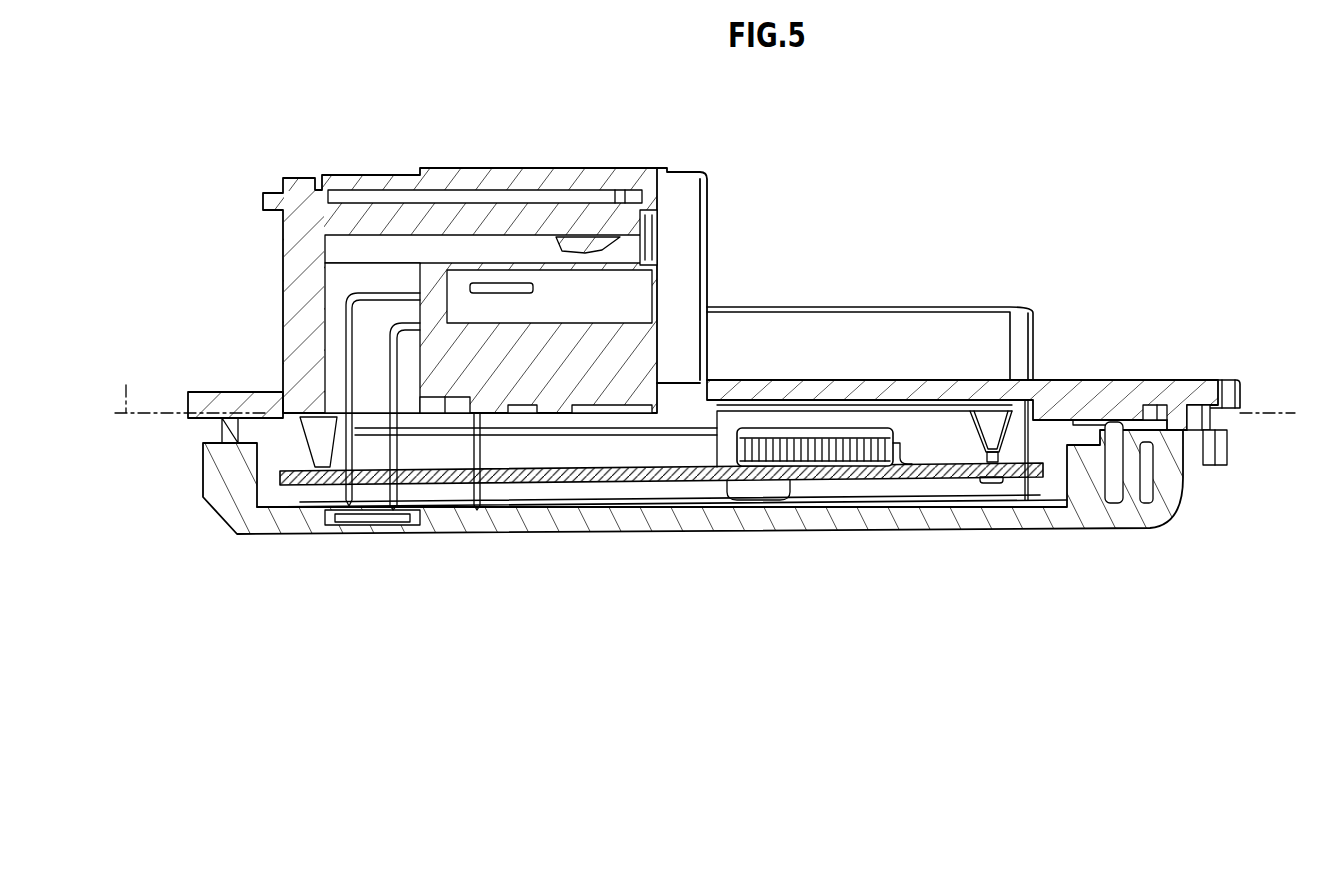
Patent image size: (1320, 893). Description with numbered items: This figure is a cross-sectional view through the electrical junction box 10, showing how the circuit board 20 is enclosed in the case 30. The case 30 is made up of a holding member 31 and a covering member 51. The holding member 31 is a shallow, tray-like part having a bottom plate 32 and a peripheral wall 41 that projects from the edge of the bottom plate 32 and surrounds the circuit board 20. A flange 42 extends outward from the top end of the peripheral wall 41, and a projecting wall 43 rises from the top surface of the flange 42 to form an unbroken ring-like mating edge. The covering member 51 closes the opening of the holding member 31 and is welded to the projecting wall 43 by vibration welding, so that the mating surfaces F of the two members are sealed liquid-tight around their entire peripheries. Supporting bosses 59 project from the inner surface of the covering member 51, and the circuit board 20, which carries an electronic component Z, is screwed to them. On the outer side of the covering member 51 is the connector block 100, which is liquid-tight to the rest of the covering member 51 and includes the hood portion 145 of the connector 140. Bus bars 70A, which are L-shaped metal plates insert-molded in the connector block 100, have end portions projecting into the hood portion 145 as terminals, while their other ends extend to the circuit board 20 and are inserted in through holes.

The electrical junction box 10 is at (554, 97).
The connector block 100 is at (378, 177).
The connector 140 is at (593, 250).
The hood portion 145 is at (606, 237).
The bus bars 70A is at (387, 357).
The supporting bosses 59 is at (780, 418).
The electronic component Z is at (863, 437).
The covering member 51 is at (1055, 380).
The case 30 is at (1130, 380).
The projecting wall 43 is at (1180, 416).
The flange 42 is at (1210, 450).
The peripheral wall 41 is at (1165, 468).
The circuit board 20 is at (432, 482).
The bottom plate 32 is at (583, 523).
The holding member 31 is at (828, 523).
The mating surfaces F is at (705, 386).